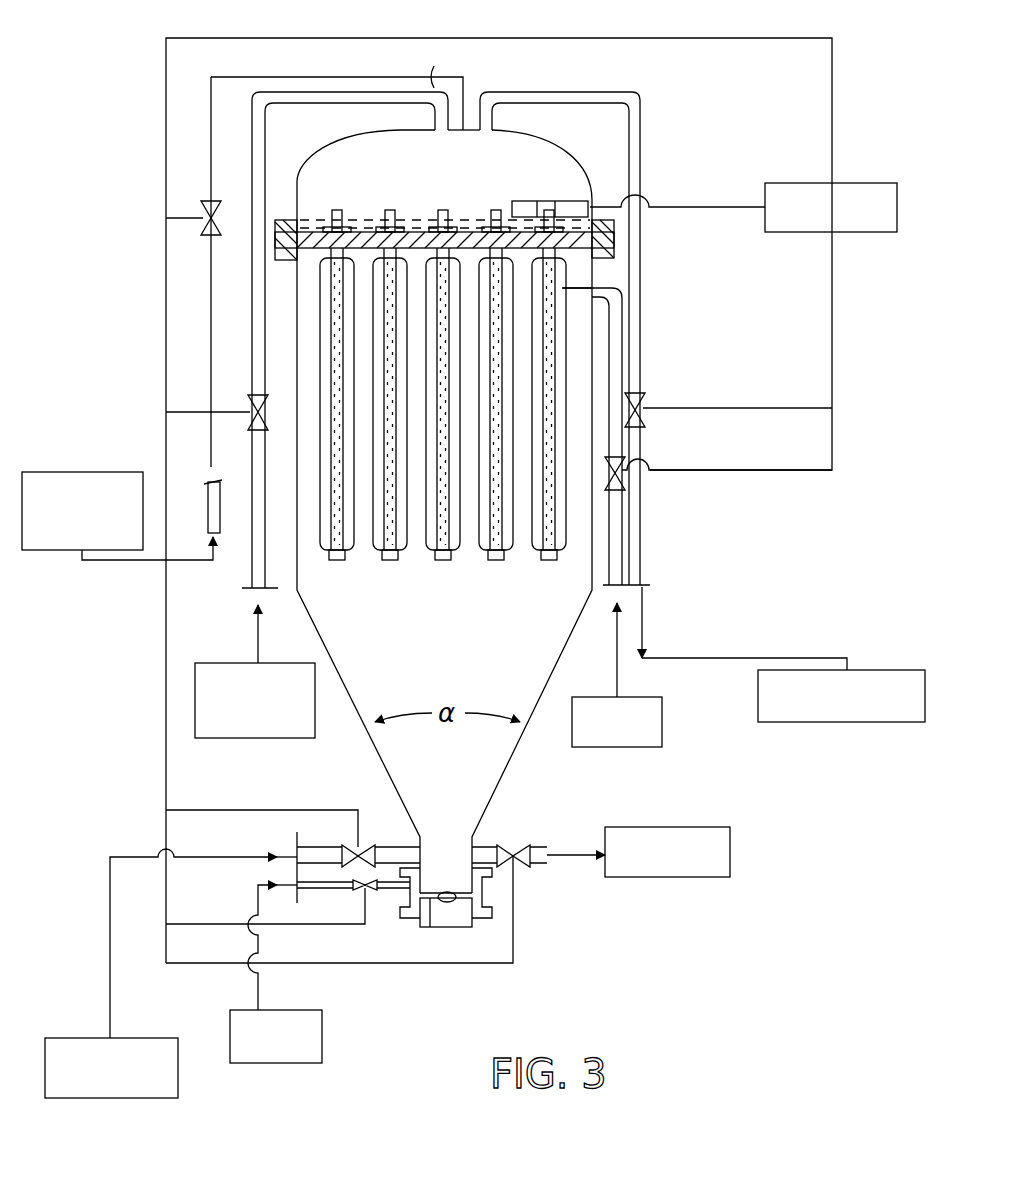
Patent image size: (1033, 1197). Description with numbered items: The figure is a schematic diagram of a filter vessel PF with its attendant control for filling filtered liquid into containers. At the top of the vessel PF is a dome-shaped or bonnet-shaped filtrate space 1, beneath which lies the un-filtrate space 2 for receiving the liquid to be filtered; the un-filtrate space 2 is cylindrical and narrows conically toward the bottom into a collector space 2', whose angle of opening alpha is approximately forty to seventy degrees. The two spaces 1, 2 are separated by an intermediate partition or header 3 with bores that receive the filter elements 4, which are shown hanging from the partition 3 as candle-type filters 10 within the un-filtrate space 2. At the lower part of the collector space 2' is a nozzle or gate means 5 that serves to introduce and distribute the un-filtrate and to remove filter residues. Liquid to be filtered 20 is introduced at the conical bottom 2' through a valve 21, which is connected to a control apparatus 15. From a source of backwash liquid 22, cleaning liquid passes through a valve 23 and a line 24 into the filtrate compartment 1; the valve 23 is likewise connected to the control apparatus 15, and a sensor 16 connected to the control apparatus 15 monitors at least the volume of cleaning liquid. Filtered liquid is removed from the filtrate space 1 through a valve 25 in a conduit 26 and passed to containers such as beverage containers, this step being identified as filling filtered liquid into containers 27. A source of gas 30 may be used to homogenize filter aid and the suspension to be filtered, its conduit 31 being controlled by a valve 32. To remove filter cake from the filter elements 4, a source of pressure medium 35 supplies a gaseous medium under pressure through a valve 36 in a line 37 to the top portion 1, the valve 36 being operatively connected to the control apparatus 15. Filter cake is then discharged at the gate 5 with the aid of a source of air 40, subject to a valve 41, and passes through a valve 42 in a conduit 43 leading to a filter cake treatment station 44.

The filtrate space 1 is at (573, 159).
The un-filtrate space 2 is at (502, 537).
The collector space 2' is at (339, 741).
The intermediate partition 3 is at (614, 238).
The filter elements 4 is at (610, 290).
The gate means 5 is at (483, 883).
The candle filter 10 is at (440, 210).
The control apparatus 15 is at (878, 183).
The sensor 16 is at (540, 200).
The liquid to be filtered 20 is at (148, 1038).
The valve 21 is at (368, 847).
The source of backwash liquid 22 is at (47, 550).
The valve 23 is at (203, 228).
The line 24 is at (382, 75).
The valve 25 is at (645, 405).
The conduit 26 is at (645, 553).
The filling filtered liquid into containers 27 is at (883, 670).
The source of gas 30 is at (662, 722).
The conduit 31 is at (623, 572).
The valve 32 is at (624, 480).
The source of pressure medium 35 is at (243, 740).
The valve 36 is at (248, 403).
The line 37 is at (250, 290).
The source of air 40 is at (322, 1035).
The valve 41 is at (355, 889).
The valve 42 is at (522, 847).
The conduit 43 is at (543, 865).
The filter cake treatment station 44 is at (730, 852).
The vessel PF is at (138, 170).